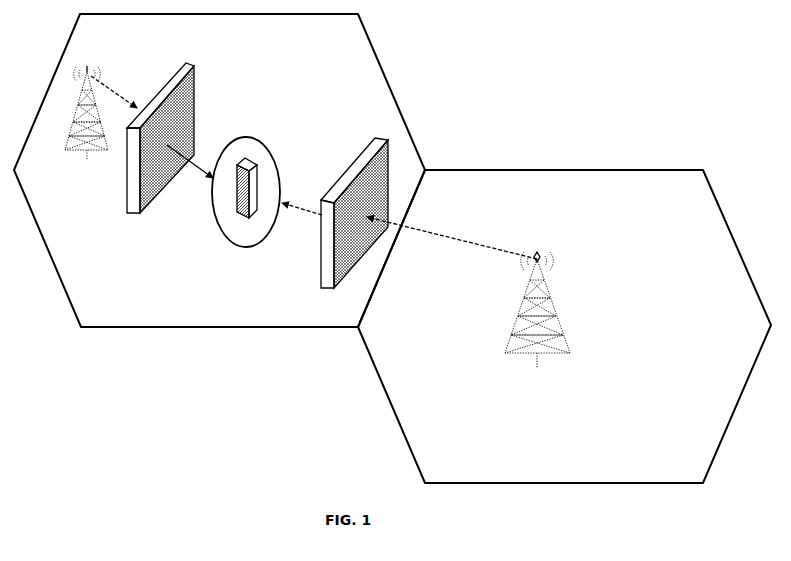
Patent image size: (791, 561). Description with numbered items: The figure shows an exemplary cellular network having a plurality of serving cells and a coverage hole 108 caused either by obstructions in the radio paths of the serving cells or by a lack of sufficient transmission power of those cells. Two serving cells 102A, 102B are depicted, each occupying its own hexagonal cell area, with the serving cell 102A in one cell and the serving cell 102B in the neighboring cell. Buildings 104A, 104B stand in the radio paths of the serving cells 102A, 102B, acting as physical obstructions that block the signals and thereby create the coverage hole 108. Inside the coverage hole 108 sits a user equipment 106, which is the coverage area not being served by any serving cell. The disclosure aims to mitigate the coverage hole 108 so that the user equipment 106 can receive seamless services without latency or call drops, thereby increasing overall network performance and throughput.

The serving cell 102A is at (557, 318).
The serving cell 102B is at (78, 138).
The building 104A is at (362, 160).
The building 104B is at (198, 85).
The user equipment 106 is at (235, 198).
The coverage hole 108 is at (246, 247).